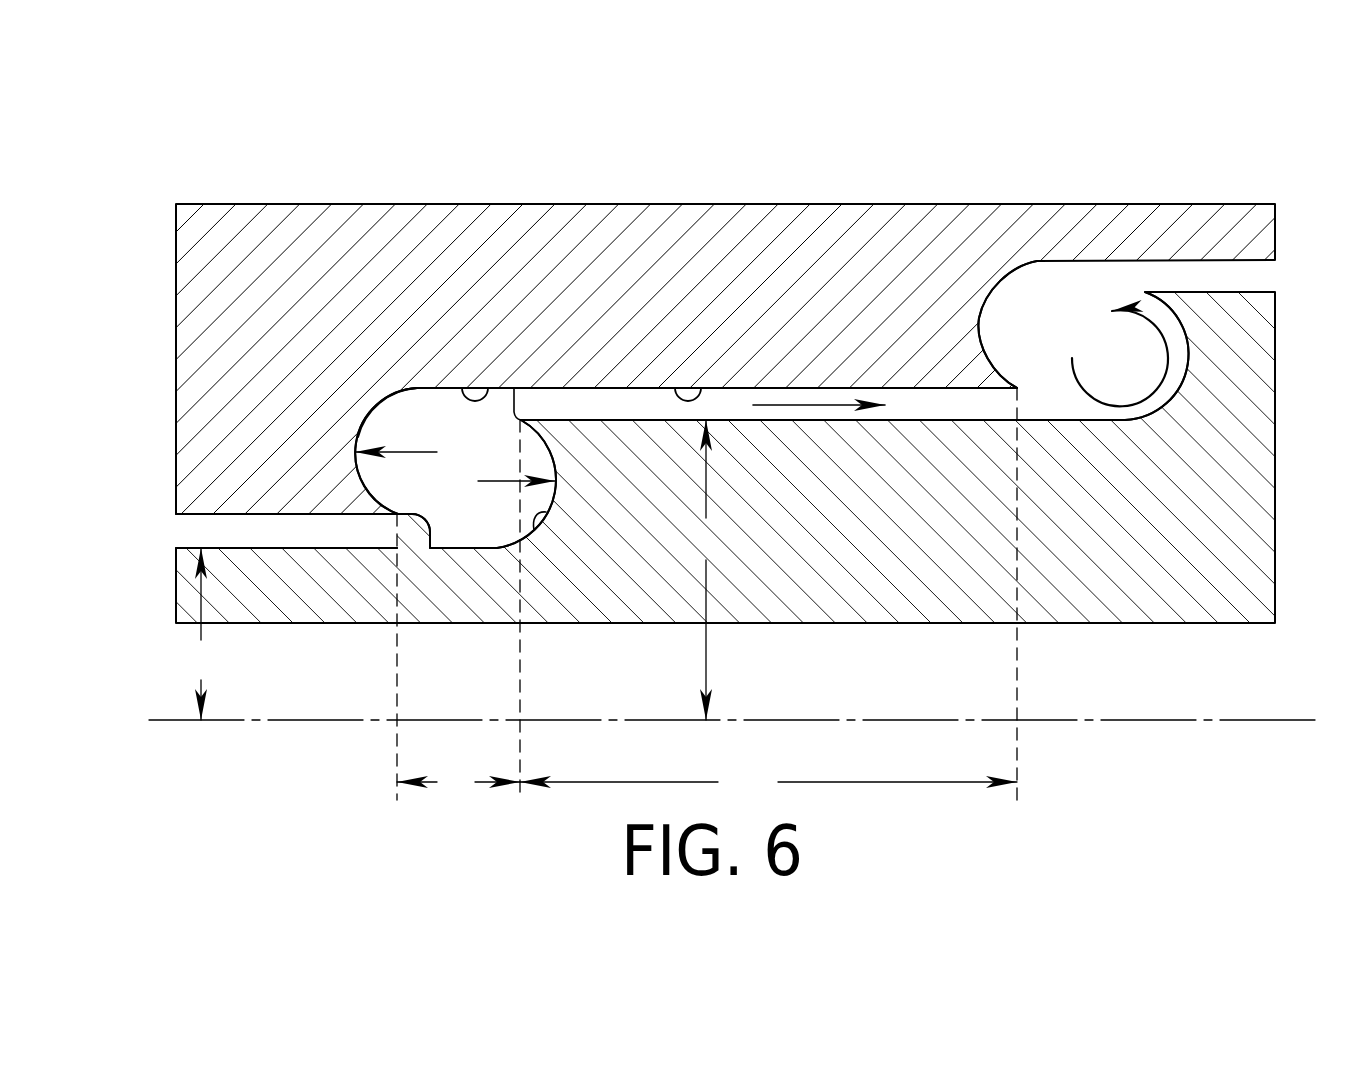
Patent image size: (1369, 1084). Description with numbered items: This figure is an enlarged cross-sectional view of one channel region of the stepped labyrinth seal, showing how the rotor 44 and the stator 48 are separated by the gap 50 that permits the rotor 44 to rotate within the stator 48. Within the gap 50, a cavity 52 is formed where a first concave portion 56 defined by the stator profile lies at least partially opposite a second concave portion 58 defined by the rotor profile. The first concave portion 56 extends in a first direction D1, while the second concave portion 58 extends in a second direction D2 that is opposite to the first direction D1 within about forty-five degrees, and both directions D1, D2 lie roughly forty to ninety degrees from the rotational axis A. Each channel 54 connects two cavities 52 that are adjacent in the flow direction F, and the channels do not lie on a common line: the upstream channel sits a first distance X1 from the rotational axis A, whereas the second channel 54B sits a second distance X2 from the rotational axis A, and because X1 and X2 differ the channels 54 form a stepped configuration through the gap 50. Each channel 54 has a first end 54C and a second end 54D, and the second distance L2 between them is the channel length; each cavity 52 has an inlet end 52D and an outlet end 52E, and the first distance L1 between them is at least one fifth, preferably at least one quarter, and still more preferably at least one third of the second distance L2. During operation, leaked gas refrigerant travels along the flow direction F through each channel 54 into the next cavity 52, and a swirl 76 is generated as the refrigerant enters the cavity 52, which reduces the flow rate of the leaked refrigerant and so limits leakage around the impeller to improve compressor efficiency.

The rotor 44 is at (1276, 408).
The stator 48 is at (176, 307).
The gap 50 is at (943, 408).
The cavity 52 is at (448, 410).
The inlet end 52D is at (410, 518).
The outlet end 52E is at (484, 388).
The channel 54 is at (203, 516).
The second channel 54B is at (703, 387).
The first end 54C is at (514, 388).
The second end 54D is at (1018, 388).
The first concave portion 56 is at (373, 415).
The second concave portion 58 is at (537, 522).
The swirl 76 is at (1168, 360).
The flow direction F is at (818, 405).
The rotational axis A is at (1245, 720).
The first distance X1 is at (202, 634).
The second distance X2 is at (705, 570).
The first direction D1 is at (390, 452).
The second direction D2 is at (507, 481).
The first distance L1 is at (458, 610).
The second distance L2 is at (768, 594).